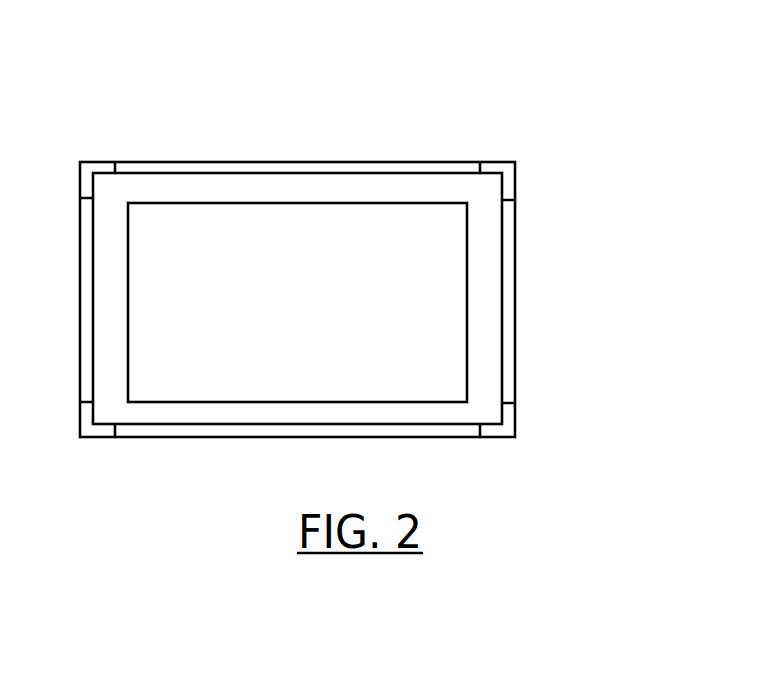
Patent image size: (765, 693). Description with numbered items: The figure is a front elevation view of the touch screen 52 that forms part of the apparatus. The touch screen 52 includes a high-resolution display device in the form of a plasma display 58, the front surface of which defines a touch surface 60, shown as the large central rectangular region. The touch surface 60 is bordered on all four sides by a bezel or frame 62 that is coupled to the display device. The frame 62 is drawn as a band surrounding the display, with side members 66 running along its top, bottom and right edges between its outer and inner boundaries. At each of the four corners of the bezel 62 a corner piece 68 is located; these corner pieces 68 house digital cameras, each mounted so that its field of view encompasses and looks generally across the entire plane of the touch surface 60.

The touch screen 52 is at (338, 270).
The plasma display 58 is at (378, 246).
The touch surface 60 is at (309, 304).
The bezel 62 is at (519, 282).
The frame side members 66 is at (228, 188).
The corner pieces 68 is at (85, 173).